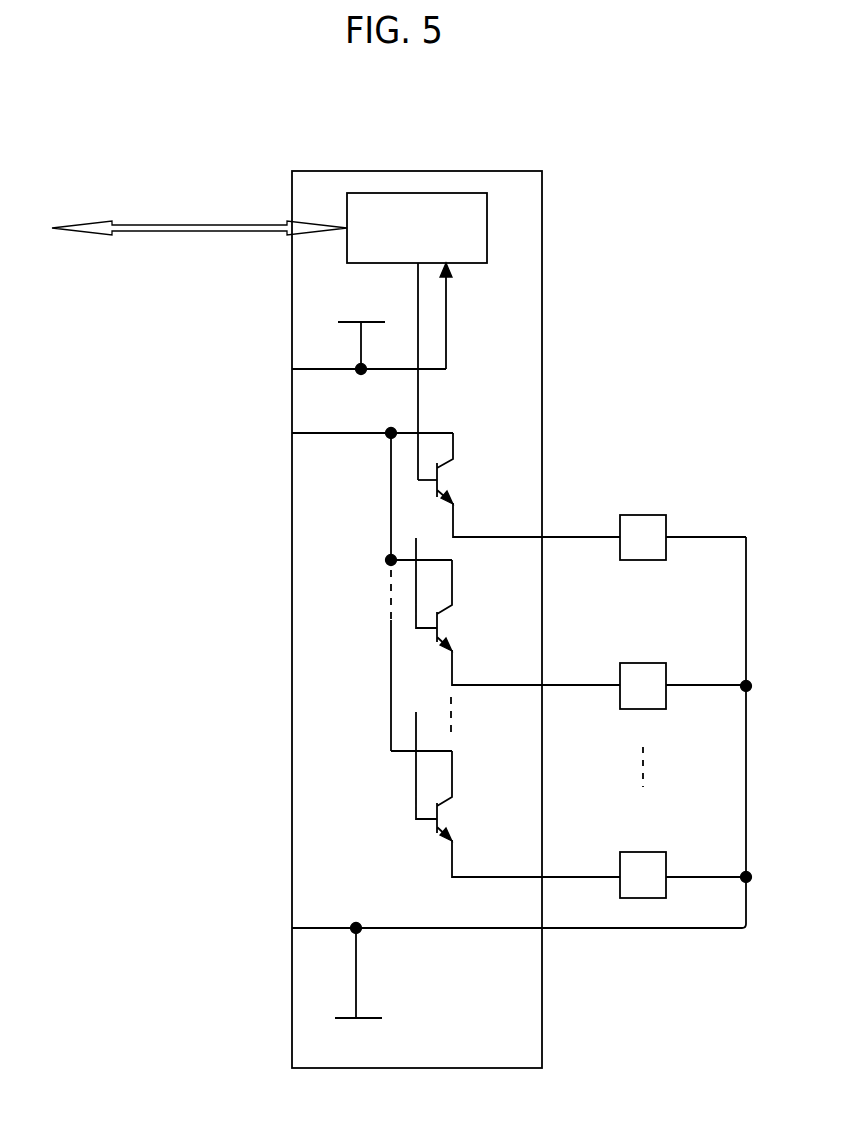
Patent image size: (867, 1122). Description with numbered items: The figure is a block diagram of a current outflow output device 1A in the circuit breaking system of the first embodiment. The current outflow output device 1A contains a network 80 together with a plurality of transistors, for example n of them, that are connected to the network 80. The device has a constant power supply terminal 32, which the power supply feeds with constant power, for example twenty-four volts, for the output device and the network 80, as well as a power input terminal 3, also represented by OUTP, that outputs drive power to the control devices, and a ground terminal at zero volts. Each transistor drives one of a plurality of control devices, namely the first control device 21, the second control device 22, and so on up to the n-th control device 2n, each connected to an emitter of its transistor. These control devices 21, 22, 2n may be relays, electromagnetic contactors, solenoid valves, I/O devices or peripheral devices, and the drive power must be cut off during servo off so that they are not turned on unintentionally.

The current outflow output device 1A is at (542, 277).
The network 80 is at (487, 208).
The constant power supply terminal 32 is at (291, 369).
The power input terminal 3 is at (292, 433).
The first control device 21 is at (666, 550).
The second control device 22 is at (666, 700).
The n-th control device 2n is at (666, 890).